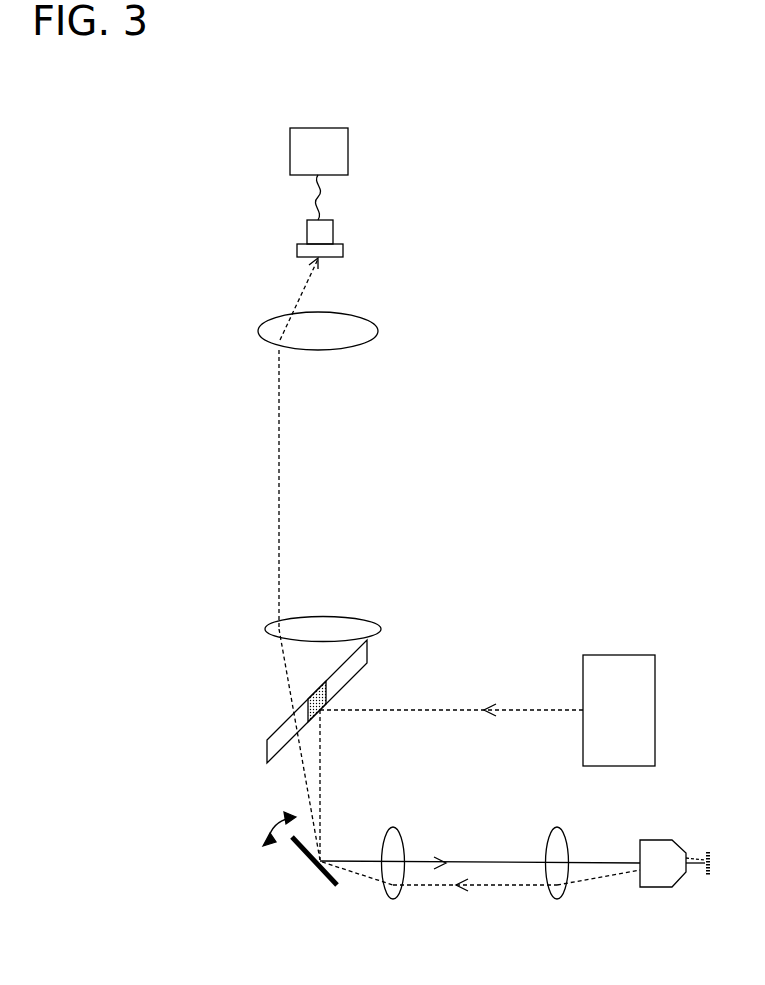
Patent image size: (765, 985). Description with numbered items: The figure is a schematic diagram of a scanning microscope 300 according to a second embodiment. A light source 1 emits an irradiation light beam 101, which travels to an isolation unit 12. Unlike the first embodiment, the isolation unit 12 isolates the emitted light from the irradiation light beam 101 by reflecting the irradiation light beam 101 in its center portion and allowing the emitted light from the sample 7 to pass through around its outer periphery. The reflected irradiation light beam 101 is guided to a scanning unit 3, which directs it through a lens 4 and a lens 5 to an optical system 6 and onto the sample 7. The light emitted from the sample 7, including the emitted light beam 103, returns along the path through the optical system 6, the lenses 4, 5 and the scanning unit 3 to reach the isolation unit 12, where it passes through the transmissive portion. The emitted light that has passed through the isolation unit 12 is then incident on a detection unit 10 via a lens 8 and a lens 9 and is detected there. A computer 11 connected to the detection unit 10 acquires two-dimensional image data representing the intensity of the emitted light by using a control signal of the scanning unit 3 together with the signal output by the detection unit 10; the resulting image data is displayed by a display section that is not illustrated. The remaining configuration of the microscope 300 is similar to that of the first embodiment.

The scanning microscope 300 is at (566, 74).
The light source 1 is at (655, 700).
The scanning unit 3 is at (302, 852).
The lens 4 is at (393, 899).
The lens 5 is at (557, 899).
The optical system 6 is at (660, 888).
The sample 7 is at (708, 878).
The lens 8 is at (265, 630).
The lens 9 is at (259, 332).
The detection unit 10 is at (297, 249).
The computer 11 is at (348, 150).
The isolation unit 12 is at (312, 692).
The irradiation light beam 101 is at (426, 706).
The emitted light beam 103 is at (485, 888).